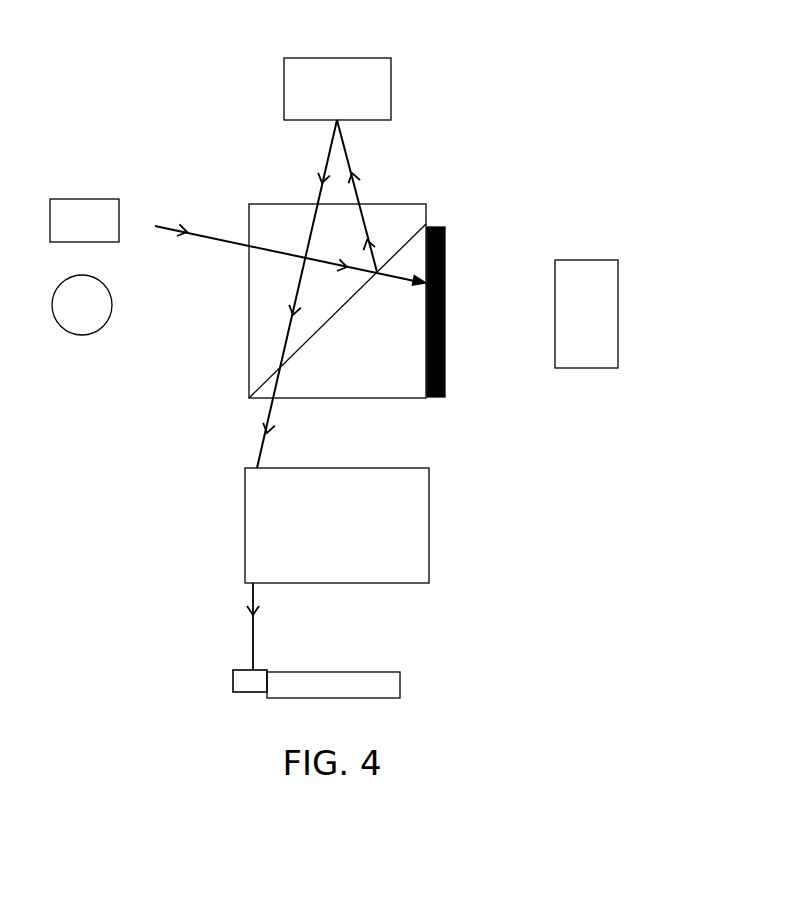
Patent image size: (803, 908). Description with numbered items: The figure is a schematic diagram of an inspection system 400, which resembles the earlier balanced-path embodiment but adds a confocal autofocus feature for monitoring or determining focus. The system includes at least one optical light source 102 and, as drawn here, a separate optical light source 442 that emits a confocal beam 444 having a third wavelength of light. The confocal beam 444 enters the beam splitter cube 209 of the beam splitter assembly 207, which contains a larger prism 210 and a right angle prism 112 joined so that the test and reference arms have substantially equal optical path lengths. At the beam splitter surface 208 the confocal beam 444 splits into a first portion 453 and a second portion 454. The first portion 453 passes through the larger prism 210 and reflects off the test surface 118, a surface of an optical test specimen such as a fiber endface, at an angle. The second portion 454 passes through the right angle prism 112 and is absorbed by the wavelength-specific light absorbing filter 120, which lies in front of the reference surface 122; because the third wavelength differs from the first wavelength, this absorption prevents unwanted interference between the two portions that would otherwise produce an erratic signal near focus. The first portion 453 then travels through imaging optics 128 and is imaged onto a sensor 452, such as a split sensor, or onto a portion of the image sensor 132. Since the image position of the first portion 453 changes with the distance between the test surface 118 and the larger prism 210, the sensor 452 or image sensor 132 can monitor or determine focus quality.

The inspection system 400 is at (144, 101).
The test surface 118 is at (325, 98).
The first portion 453 is at (345, 147).
The confocal beam 444 is at (222, 238).
The beam splitter cube 209 is at (273, 199).
The larger prism 210 is at (306, 295).
The right angle prism 112 is at (335, 370).
The second portion 454 is at (397, 279).
The wavelength-specific light absorbing filter 120 is at (443, 393).
The beam splitter assembly 207 is at (456, 189).
The beam splitter surface 208 is at (262, 375).
The optical light source 442 is at (73, 229).
The optical light source 102 is at (70, 313).
The reference surface 122 is at (574, 319).
The imaging optics 128 is at (320, 535).
The sensor 452 is at (239, 690).
The image sensor 132 is at (321, 694).